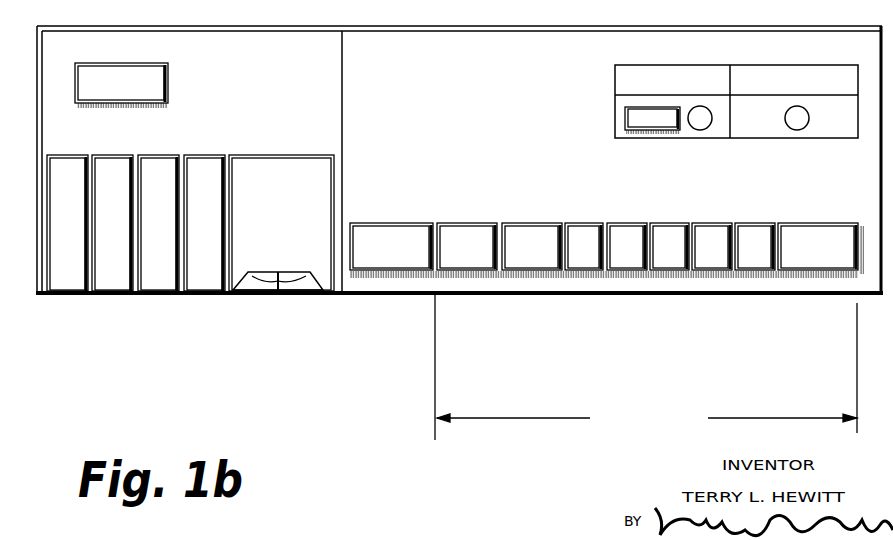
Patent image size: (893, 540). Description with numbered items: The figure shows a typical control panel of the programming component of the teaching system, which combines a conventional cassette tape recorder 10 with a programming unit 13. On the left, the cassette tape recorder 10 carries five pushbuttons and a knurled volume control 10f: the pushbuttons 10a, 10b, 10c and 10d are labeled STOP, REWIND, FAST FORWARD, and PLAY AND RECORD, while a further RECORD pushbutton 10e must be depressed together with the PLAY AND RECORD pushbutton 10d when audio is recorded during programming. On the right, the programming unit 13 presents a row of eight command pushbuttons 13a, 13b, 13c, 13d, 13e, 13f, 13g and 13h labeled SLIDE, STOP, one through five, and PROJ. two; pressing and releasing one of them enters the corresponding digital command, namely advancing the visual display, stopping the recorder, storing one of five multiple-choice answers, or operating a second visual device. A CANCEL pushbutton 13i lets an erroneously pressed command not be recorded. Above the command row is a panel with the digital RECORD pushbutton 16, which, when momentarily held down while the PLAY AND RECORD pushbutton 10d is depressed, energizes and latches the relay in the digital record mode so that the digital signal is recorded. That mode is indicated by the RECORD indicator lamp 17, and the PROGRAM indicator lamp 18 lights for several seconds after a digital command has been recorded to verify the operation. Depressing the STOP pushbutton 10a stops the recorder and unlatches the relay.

The cassette tape recorder 10 is at (259, 112).
The STOP pushbutton 10a is at (61, 283).
The REWIND pushbutton 10b is at (112, 283).
The FAST FORWARD pushbutton 10c is at (162, 283).
The PLAY AND RECORD pushbutton 10d is at (209, 283).
The RECORD pushbutton 10e is at (168, 72).
The knurled volume control 10f is at (278, 291).
The programming unit 13 is at (495, 112).
The SLIDE command pushbutton 13a is at (463, 265).
The STOP command pushbutton 13b is at (530, 265).
The command pushbutton 1 13c is at (585, 265).
The command pushbutton 2 13d is at (628, 265).
The command pushbutton 3 13e is at (665, 265).
The command pushbutton 4 13f is at (712, 265).
The command pushbutton 5 13g is at (751, 265).
The PROJ. 2 command pushbutton 13h is at (813, 265).
The CANCEL pushbutton 13i is at (380, 265).
The digital RECORD pushbutton 16 is at (615, 110).
The RECORD indicator lamp 17 is at (699, 130).
The PROGRAM indicator lamp 18 is at (796, 130).